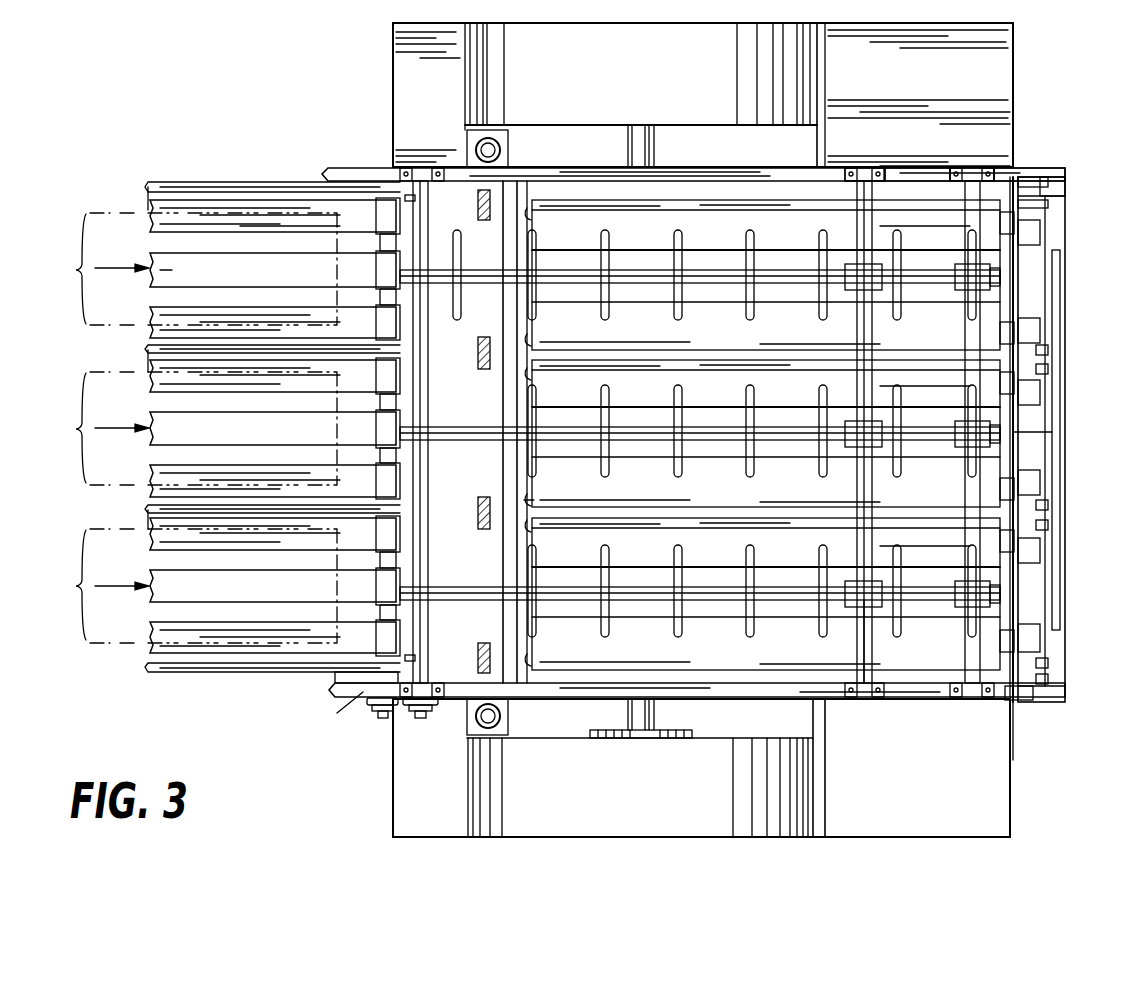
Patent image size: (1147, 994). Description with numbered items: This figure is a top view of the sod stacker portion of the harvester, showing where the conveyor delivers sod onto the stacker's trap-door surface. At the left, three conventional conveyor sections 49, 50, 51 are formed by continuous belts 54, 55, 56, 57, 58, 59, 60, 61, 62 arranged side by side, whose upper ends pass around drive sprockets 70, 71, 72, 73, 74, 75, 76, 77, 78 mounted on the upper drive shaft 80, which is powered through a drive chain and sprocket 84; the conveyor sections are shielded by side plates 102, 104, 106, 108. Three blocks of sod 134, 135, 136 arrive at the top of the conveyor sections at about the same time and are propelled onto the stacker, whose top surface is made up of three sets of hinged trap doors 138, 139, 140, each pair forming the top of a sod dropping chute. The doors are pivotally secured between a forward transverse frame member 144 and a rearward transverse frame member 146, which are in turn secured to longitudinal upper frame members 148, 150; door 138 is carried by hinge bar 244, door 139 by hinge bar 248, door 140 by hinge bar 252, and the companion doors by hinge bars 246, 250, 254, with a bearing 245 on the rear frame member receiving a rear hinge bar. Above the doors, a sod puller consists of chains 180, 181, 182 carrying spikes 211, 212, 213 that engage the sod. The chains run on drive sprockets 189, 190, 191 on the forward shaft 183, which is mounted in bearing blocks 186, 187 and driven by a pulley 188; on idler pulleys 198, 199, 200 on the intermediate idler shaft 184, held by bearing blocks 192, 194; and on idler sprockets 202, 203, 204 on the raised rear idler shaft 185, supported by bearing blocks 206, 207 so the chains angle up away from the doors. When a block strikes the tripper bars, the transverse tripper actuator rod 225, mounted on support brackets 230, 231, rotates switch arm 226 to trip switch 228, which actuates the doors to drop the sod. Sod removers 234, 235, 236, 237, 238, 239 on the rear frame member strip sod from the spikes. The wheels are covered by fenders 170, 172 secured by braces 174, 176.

The fender 172 is at (648, 40).
The brace 176 is at (822, 88).
The bearing block 187 is at (415, 138).
The fender 170 is at (686, 826).
The brace 174 is at (828, 762).
The bearing block 186 is at (432, 707).
The longitudinal upper frame member 150 is at (915, 698).
The forward chain supporting shaft 183 is at (420, 660).
The drive sprocket 189 is at (428, 545).
The drive sprocket 190 is at (430, 400).
The drive sprocket 191 is at (435, 262).
The bearing block 192 is at (862, 698).
The bearing block 206 is at (972, 698).
The bearing block 194 is at (864, 181).
The longitudinal upper frame member 148 is at (905, 168).
The bearing block 207 is at (966, 168).
The rearward transverse frame member 146 is at (1056, 284).
The switch arm 226 is at (1030, 181).
The support bracket 231 is at (1030, 177).
The switch 228 is at (1062, 186).
The sod remover 239 is at (1028, 232).
The sod remover 238 is at (1026, 334).
The sod remover 237 is at (1028, 392).
The tripper actuator rod 225 is at (1052, 432).
The sod remover 236 is at (1026, 488).
The sod remover 235 is at (1028, 550).
The sod remover 234 is at (1026, 640).
The bearing 245 is at (1048, 664).
The support bracket 230 is at (1016, 704).
The trap door 140 is at (766, 275).
The sod puller chain 182 is at (712, 277).
The forward transverse frame member 144 is at (536, 240).
The spikes 213 is at (666, 240).
The idler sprocket 204 is at (900, 262).
The idler pulley 200 is at (880, 290).
The hinge bar 254 is at (533, 214).
The hinge bar 252 is at (534, 338).
The trap door 139 is at (766, 433).
The sod puller chain 181 is at (704, 434).
The spikes 212 is at (748, 392).
The idler sprocket 203 is at (900, 416).
The idler pulley 199 is at (880, 447).
The hinge bar 250 is at (533, 376).
The hinge bar 248 is at (534, 500).
The trap door 138 is at (766, 594).
The sod puller chain 180 is at (708, 594).
The spikes 211 is at (674, 554).
The idler pulley 198 is at (838, 542).
The idler sprocket 202 is at (900, 574).
The rear idler shaft 185 is at (972, 660).
The intermediate idler shaft 184 is at (866, 656).
The hinge bar 246 is at (533, 528).
The hinge bar 244 is at (533, 660).
The side plate 108 is at (212, 182).
The side plate 106 is at (150, 348).
The side plate 104 is at (150, 508).
The side plate 102 is at (160, 672).
The drive sprocket 78 is at (338, 212).
The drive sprocket 77 is at (338, 267).
The drive sprocket 76 is at (338, 318).
The drive sprocket 75 is at (338, 372).
The drive sprocket 74 is at (338, 425).
The drive sprocket 73 is at (338, 477).
The drive sprocket 72 is at (338, 530).
The drive sprocket 71 is at (338, 582).
The drive sprocket 70 is at (338, 633).
The continuous belt 62 is at (212, 232).
The continuous belt 61 is at (218, 270).
The continuous belt 60 is at (266, 308).
The continuous belt 59 is at (212, 392).
The continuous belt 58 is at (208, 430).
The continuous belt 57 is at (320, 430).
The continuous belt 56 is at (206, 550).
The continuous belt 55 is at (227, 588).
The continuous belt 54 is at (315, 588).
The conveyor section 51 is at (190, 269).
The conveyor section 50 is at (192, 428).
The conveyor section 49 is at (192, 586).
The block of sod 136 is at (132, 210).
The block of sod 135 is at (94, 396).
The block of sod 134 is at (84, 539).
The upper drive shaft 80 is at (350, 703).
The sprocket 84 is at (376, 718).
The pulley 188 is at (412, 718).